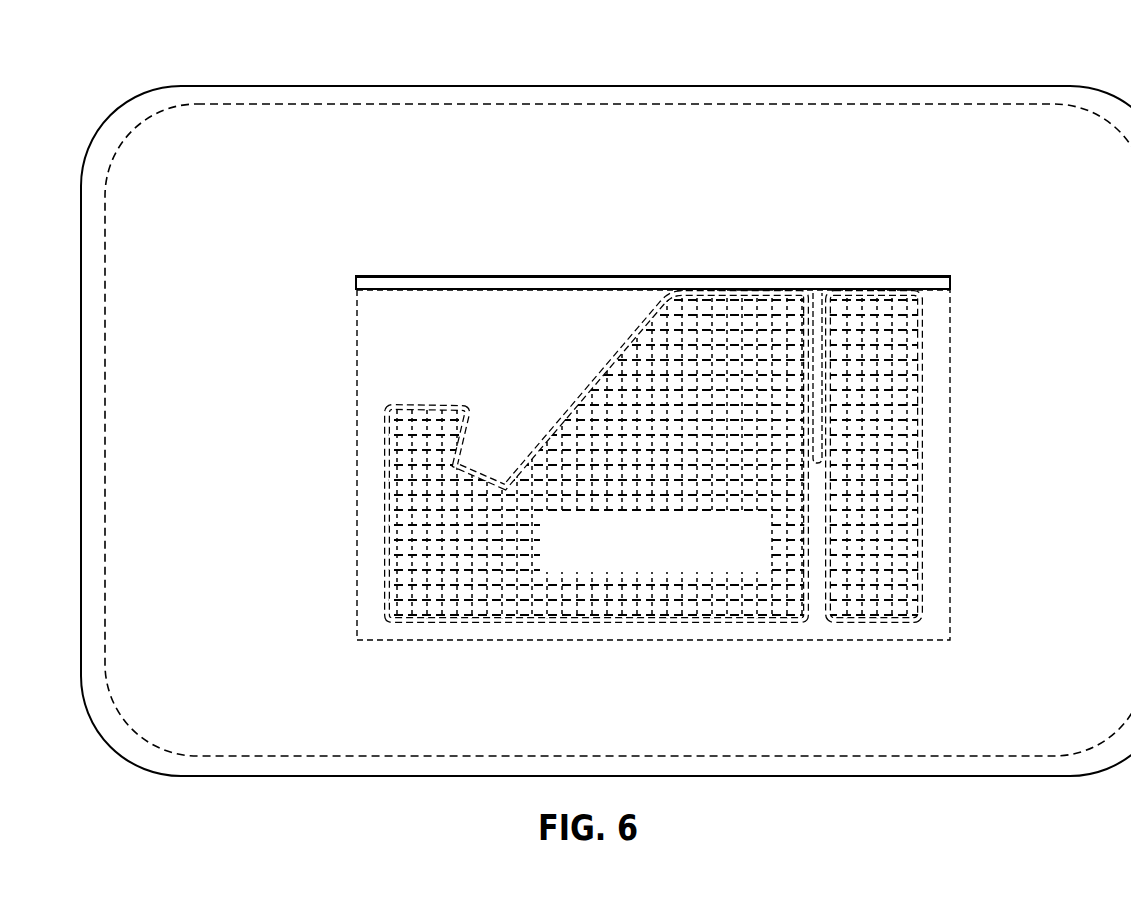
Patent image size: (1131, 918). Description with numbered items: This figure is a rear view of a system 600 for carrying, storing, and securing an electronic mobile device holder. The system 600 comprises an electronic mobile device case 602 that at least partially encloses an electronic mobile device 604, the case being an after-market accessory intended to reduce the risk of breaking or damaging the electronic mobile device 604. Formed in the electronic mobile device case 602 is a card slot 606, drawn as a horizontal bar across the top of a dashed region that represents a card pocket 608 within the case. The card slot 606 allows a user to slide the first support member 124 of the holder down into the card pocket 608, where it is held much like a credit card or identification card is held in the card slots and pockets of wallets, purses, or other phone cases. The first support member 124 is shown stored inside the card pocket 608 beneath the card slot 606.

The system 600 is at (531, 60).
The electronic mobile device case 602 is at (978, 88).
The electronic mobile device 604 is at (953, 104).
The card slot 606 is at (388, 275).
The card pocket 608 is at (356, 368).
The first support member 124 is at (922, 500).